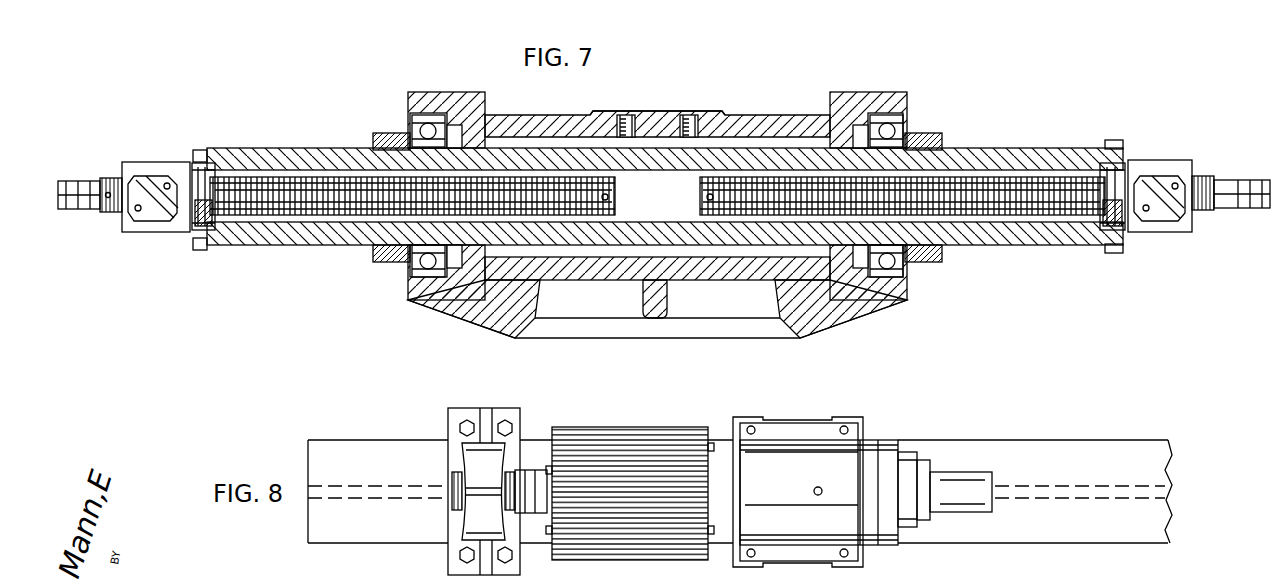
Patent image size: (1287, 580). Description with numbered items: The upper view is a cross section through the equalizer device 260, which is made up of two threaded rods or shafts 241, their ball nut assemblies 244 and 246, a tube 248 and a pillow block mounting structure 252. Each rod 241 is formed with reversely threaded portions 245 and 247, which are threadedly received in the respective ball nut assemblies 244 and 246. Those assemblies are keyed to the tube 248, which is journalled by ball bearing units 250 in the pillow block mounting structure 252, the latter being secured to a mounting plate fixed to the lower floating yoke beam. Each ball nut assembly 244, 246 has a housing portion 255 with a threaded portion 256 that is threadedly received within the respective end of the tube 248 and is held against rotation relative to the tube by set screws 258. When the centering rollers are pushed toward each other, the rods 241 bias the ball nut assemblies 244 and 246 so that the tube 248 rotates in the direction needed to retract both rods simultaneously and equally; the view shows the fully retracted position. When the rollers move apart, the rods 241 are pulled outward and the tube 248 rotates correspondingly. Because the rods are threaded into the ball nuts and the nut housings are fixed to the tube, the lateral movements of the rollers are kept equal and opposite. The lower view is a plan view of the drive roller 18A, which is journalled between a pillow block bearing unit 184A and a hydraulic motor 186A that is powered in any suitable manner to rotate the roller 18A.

In FIG. 7, the threaded shaft or rod 241 is at (81, 180).
In FIG. 7, the ball nut assembly 244 is at (1165, 160).
In FIG. 7, the reversely threaded portion 245 is at (1060, 218).
In FIG. 7, the ball nut assembly 246 is at (163, 161).
In FIG. 7, the reversely threaded portion 247 is at (300, 218).
In FIG. 7, the tube 248 is at (1030, 149).
In FIG. 7, the ball bearing unit 250 is at (380, 131).
In FIG. 7, the pillow block mounting structure 252 is at (798, 114).
In FIG. 7, the housing portion 255 is at (1196, 170).
In FIG. 7, the threaded portion 256 is at (197, 214).
In FIG. 7, the set screw 258 is at (204, 151).
In FIG. 7, the equalizer device 260 is at (372, 322).
In FIG. 8, the pillow block bearing unit 184A is at (446, 407).
In FIG. 8, the drive roller 18A is at (664, 444).
In FIG. 8, the hydraulic motor 186A is at (813, 460).